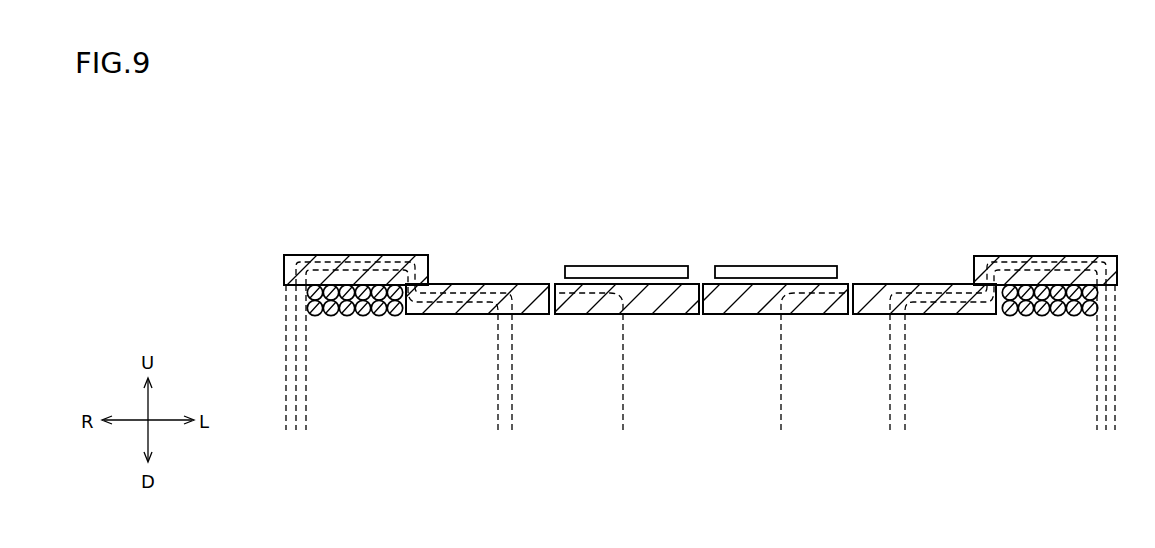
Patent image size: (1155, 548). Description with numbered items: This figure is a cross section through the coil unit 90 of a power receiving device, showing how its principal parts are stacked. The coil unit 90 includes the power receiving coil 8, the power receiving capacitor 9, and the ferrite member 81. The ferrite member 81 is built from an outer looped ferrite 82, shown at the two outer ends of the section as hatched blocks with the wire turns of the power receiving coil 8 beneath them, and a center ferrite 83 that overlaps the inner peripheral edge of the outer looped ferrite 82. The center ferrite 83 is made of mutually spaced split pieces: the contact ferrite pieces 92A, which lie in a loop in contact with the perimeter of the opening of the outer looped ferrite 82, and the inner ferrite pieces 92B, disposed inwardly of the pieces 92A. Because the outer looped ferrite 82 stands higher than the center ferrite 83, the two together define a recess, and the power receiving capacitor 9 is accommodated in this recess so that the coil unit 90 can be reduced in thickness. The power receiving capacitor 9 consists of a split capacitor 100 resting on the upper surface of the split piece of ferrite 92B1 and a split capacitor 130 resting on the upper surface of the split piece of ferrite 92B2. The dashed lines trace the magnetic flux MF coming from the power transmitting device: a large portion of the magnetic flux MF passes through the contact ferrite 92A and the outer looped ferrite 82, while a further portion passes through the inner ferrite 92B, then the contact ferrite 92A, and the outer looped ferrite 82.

The power receiving coil 8 is at (1020, 298).
The power receiving capacitor 9 is at (772, 227).
The ferrite member 81 is at (468, 166).
The outer looped ferrite 82 is at (351, 248).
The center ferrite 83 is at (446, 248).
The coil unit 90 is at (686, 164).
The split piece of ferrite (contact ferrite) 92A is at (511, 300).
The split piece of ferrite (inner ferrite) 92B is at (718, 240).
The split piece of ferrite 92B1 is at (576, 300).
The split piece of ferrite 92B2 is at (810, 300).
The split capacitor 100 is at (665, 266).
The split capacitor 130 is at (740, 266).
The magnetic flux MF is at (701, 359).